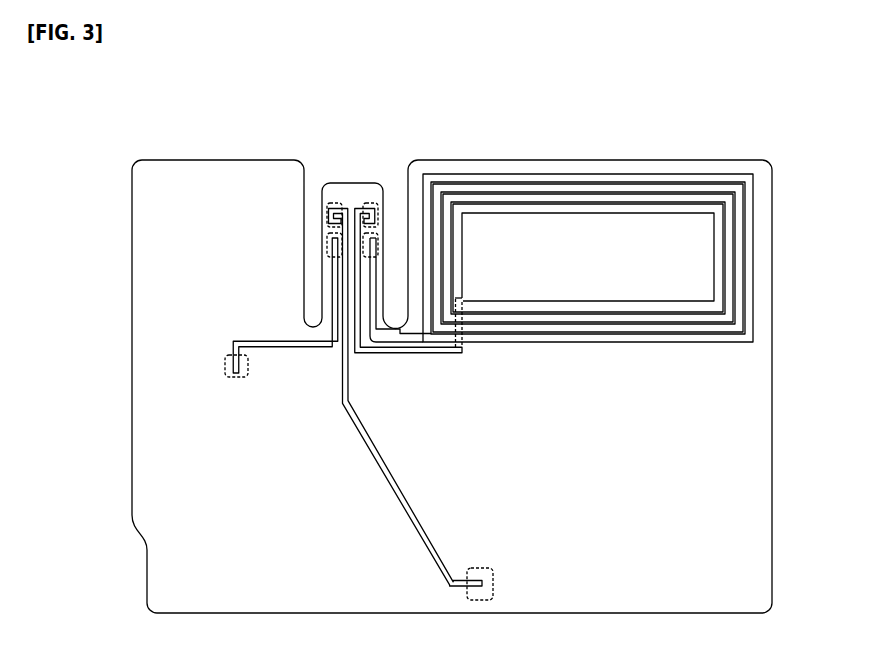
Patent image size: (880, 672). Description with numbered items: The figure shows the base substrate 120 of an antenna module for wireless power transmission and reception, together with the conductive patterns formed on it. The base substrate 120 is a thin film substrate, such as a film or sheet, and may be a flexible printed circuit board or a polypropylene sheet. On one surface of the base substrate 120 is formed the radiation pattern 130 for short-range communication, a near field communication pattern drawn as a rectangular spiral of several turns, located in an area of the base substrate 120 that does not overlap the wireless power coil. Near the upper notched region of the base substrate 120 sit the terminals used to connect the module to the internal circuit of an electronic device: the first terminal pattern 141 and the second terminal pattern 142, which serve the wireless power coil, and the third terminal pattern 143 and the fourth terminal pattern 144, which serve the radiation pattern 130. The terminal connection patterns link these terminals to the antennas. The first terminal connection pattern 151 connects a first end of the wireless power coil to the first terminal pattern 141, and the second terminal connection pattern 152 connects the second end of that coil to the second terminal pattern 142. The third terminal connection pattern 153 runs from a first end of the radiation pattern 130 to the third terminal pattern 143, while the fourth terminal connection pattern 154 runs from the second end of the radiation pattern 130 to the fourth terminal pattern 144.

The base substrate 120 is at (772, 405).
The radiation pattern for short-range communication 130 is at (753, 253).
The first terminal pattern 141 is at (332, 203).
The second terminal pattern 142 is at (327, 243).
The third terminal pattern 143 is at (371, 205).
The fourth terminal pattern 144 is at (379, 243).
The first terminal connection pattern 151 is at (440, 570).
The second terminal connection pattern 152 is at (224, 367).
The third terminal connection pattern 153 is at (358, 204).
The fourth terminal connection pattern 154 is at (367, 282).